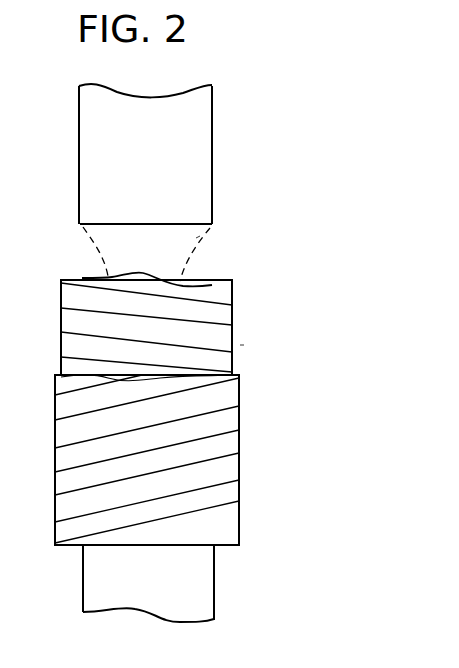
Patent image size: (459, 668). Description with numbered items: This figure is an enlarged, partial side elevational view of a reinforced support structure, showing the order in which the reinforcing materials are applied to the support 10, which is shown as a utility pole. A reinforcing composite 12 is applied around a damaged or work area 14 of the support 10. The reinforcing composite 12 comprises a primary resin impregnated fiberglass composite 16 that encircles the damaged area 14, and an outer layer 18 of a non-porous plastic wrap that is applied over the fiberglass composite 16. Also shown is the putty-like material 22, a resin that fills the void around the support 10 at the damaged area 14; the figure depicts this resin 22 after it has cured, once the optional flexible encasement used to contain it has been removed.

The support 10 is at (207, 115).
The reinforcing composite 12 is at (262, 345).
The damaged or work area 14 is at (198, 238).
The primary resin impregnated fiberglass composite 16 is at (232, 305).
The outer layer of non-porous plastic wrap 18 is at (239, 417).
The putty-like material 22 is at (103, 223).